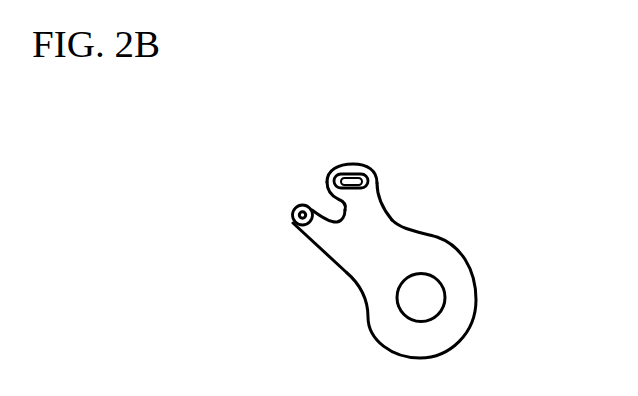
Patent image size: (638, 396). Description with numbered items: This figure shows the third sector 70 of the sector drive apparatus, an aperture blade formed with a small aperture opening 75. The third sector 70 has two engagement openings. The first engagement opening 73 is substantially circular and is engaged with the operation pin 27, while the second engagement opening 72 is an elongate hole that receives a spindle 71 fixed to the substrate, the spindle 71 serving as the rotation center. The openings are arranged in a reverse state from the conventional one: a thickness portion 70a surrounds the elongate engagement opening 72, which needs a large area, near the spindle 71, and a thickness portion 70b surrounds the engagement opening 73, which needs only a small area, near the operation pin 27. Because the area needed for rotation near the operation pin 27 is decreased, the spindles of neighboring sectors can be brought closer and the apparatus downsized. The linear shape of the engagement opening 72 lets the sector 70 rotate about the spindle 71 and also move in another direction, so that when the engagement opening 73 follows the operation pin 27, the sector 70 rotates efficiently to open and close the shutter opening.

The third sector 70 is at (460, 338).
The thickness portion 70a is at (330, 173).
The thickness portion 70b is at (302, 205).
The spindle 71 is at (345, 181).
The second engagement opening 72 is at (370, 178).
The first engagement opening 73 is at (296, 223).
The small aperture opening 75 is at (437, 297).
The operation pin 27 is at (292, 215).